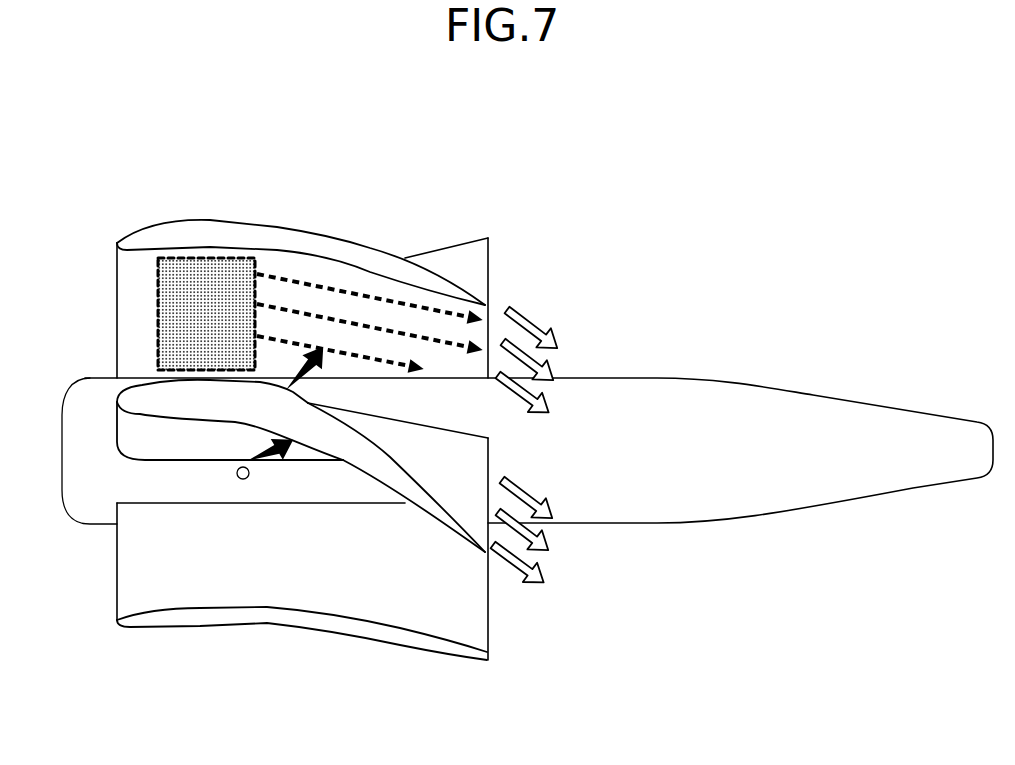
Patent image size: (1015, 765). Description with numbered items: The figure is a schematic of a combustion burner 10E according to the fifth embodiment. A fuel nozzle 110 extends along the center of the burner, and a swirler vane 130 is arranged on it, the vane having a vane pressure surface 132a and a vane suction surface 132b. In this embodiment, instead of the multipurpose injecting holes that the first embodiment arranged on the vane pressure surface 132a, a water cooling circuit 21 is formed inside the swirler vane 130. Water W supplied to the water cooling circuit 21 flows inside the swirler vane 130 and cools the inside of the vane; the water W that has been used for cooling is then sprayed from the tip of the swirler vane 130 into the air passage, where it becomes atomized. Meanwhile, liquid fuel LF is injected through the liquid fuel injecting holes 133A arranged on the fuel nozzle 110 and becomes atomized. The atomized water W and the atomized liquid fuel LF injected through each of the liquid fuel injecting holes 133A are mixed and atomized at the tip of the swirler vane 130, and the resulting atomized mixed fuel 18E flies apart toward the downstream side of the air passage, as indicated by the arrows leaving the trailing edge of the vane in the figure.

The combustion burner 10E is at (601, 181).
The fuel nozzle 110 is at (800, 405).
The swirler vane 130 is at (158, 238).
The vane pressure surface 132a is at (203, 442).
The vane suction surface 132b is at (463, 453).
The liquid fuel injecting holes 133A is at (243, 480).
The liquid fuel LF is at (273, 457).
The water cooling circuit 21 is at (230, 277).
The water W is at (352, 292).
The atomized mixed fuel 18E is at (535, 316).